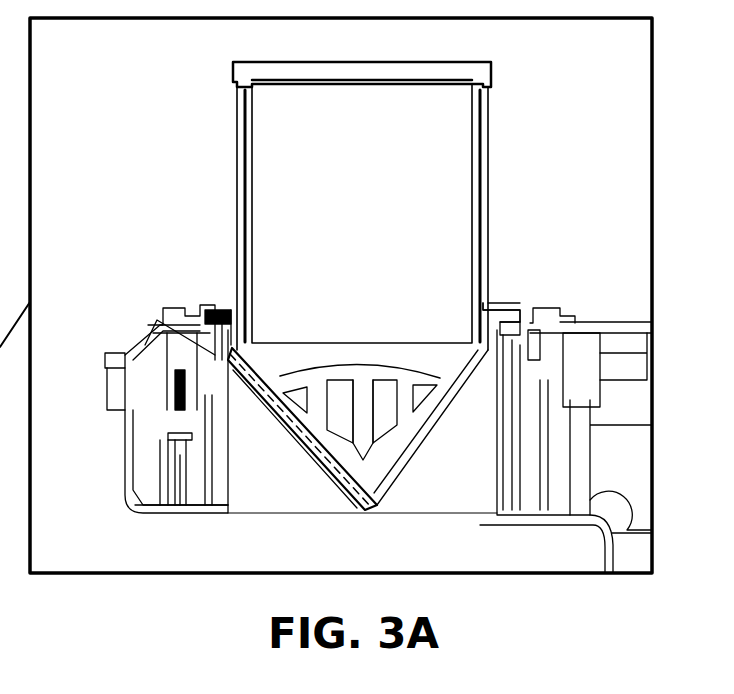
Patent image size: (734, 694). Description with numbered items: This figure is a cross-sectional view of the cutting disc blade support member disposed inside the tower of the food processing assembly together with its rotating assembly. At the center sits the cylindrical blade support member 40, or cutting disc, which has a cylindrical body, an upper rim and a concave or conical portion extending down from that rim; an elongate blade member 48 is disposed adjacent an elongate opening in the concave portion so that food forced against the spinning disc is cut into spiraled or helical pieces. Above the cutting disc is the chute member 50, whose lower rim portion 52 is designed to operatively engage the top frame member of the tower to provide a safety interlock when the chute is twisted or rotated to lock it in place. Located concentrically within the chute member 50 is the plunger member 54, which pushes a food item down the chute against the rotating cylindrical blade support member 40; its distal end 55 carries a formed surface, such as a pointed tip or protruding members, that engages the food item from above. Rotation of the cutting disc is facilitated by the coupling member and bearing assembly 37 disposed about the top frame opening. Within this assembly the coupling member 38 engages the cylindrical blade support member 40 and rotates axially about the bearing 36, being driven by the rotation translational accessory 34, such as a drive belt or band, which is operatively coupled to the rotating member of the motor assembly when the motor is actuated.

The rotation translational accessory 34 is at (622, 402).
The bearing 36 is at (210, 350).
The coupling member and bearing assembly 37 is at (150, 420).
The coupling member 38 is at (208, 305).
The cylindrical blade support member 40 is at (228, 305).
The elongate blade member 48 is at (300, 440).
The chute member 50 is at (490, 170).
The lower rim portion 52 is at (505, 303).
The plunger member 54 is at (455, 185).
The distal end 55 is at (360, 380).